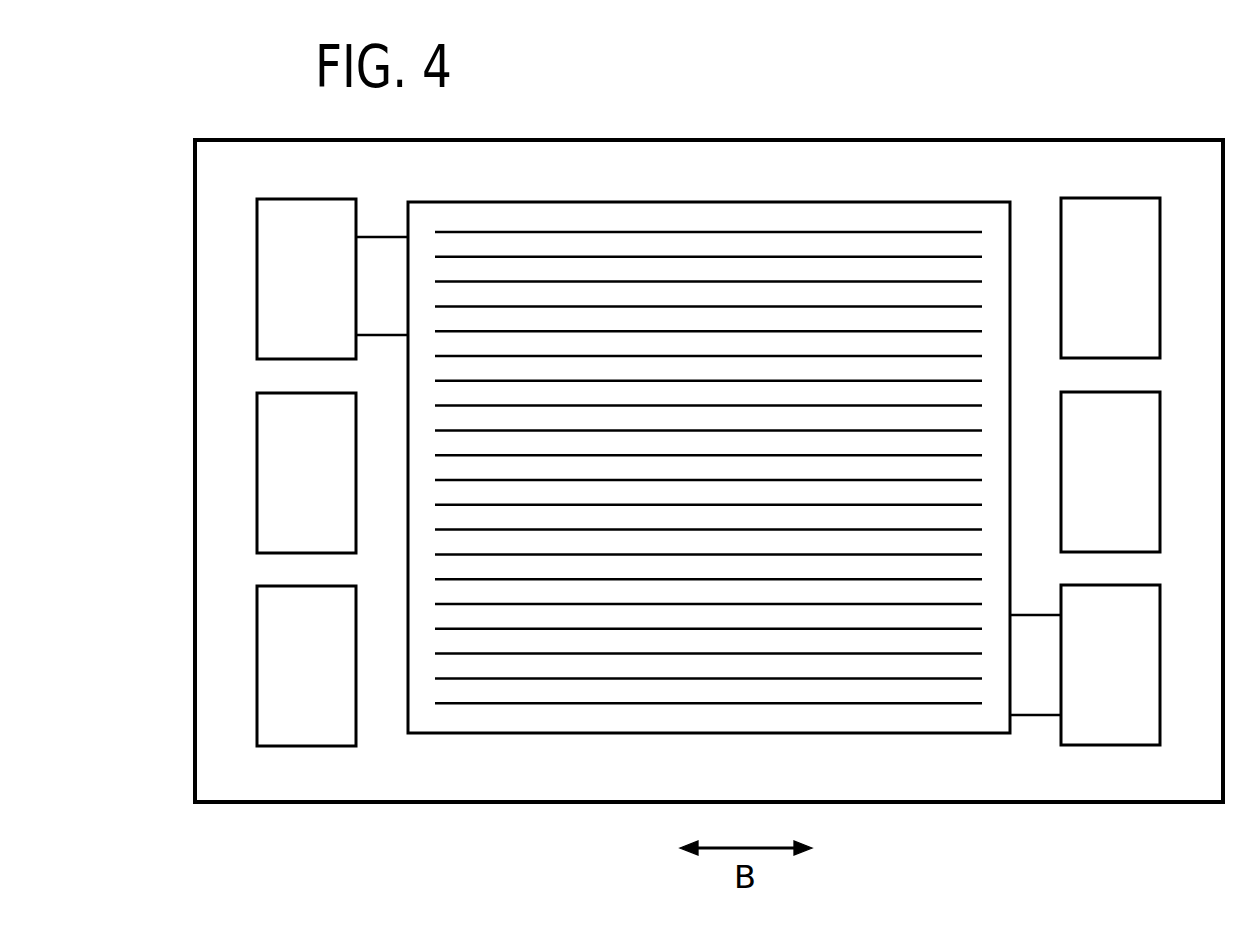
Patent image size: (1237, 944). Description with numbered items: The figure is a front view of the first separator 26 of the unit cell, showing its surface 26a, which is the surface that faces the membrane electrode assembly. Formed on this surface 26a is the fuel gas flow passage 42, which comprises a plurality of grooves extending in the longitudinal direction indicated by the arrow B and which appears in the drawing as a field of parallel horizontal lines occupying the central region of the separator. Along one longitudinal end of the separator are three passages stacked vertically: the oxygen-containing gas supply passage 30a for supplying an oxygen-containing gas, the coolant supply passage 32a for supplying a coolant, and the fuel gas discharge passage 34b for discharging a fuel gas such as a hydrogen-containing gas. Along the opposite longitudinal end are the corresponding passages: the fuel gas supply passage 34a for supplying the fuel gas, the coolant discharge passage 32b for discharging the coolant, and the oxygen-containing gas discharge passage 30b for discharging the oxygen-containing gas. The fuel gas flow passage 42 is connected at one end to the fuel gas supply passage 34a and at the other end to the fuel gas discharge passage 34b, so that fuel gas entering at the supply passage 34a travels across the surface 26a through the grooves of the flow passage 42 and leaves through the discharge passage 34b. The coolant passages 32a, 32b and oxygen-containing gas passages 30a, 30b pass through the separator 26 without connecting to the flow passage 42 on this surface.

The first separator 26 is at (1077, 112).
The surface 26a is at (570, 783).
The fuel gas flow passage 42 is at (712, 232).
The oxygen-containing gas supply passage 30a is at (1110, 278).
The oxygen-containing gas discharge passage 30b is at (306, 666).
The coolant supply passage 32a is at (1110, 472).
The coolant discharge passage 32b is at (306, 473).
The fuel gas supply passage 34a is at (332, 279).
The fuel gas discharge passage 34b is at (1085, 665).